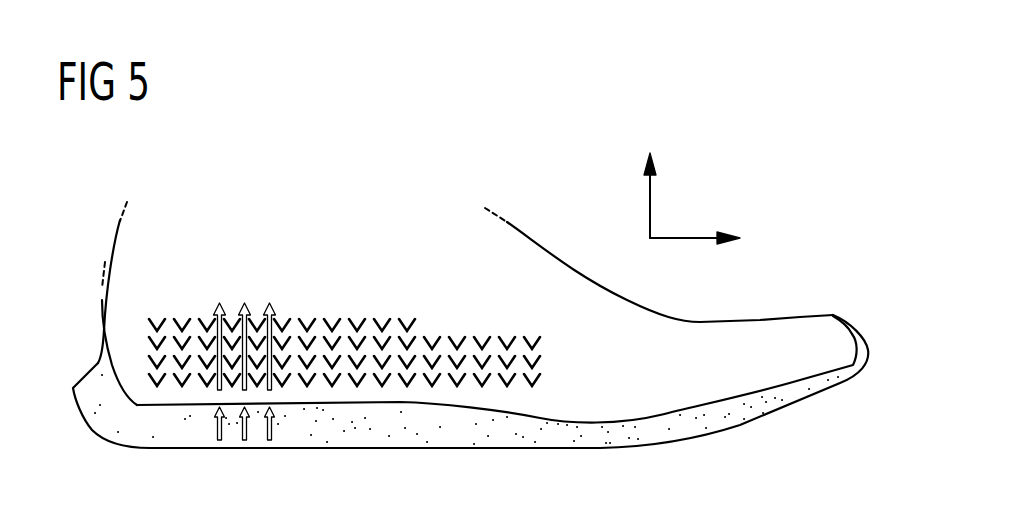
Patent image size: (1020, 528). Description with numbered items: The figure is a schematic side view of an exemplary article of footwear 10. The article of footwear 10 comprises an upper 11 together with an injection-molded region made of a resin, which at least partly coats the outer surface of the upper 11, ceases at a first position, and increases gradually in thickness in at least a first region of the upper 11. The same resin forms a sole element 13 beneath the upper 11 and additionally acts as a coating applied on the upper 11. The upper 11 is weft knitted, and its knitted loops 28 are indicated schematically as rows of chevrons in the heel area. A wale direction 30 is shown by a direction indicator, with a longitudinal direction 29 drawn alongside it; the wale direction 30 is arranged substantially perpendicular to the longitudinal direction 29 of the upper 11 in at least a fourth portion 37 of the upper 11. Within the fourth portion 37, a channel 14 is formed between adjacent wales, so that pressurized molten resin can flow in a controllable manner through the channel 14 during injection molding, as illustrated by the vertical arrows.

The article of footwear 10 is at (218, 178).
The upper 11 is at (152, 240).
The sole element 13 is at (493, 435).
The channel 14 is at (173, 376).
The knitted loops 28 is at (160, 373).
The longitudinal direction 29 is at (692, 239).
The wale direction 30 is at (647, 200).
The fourth portion 37 is at (340, 387).